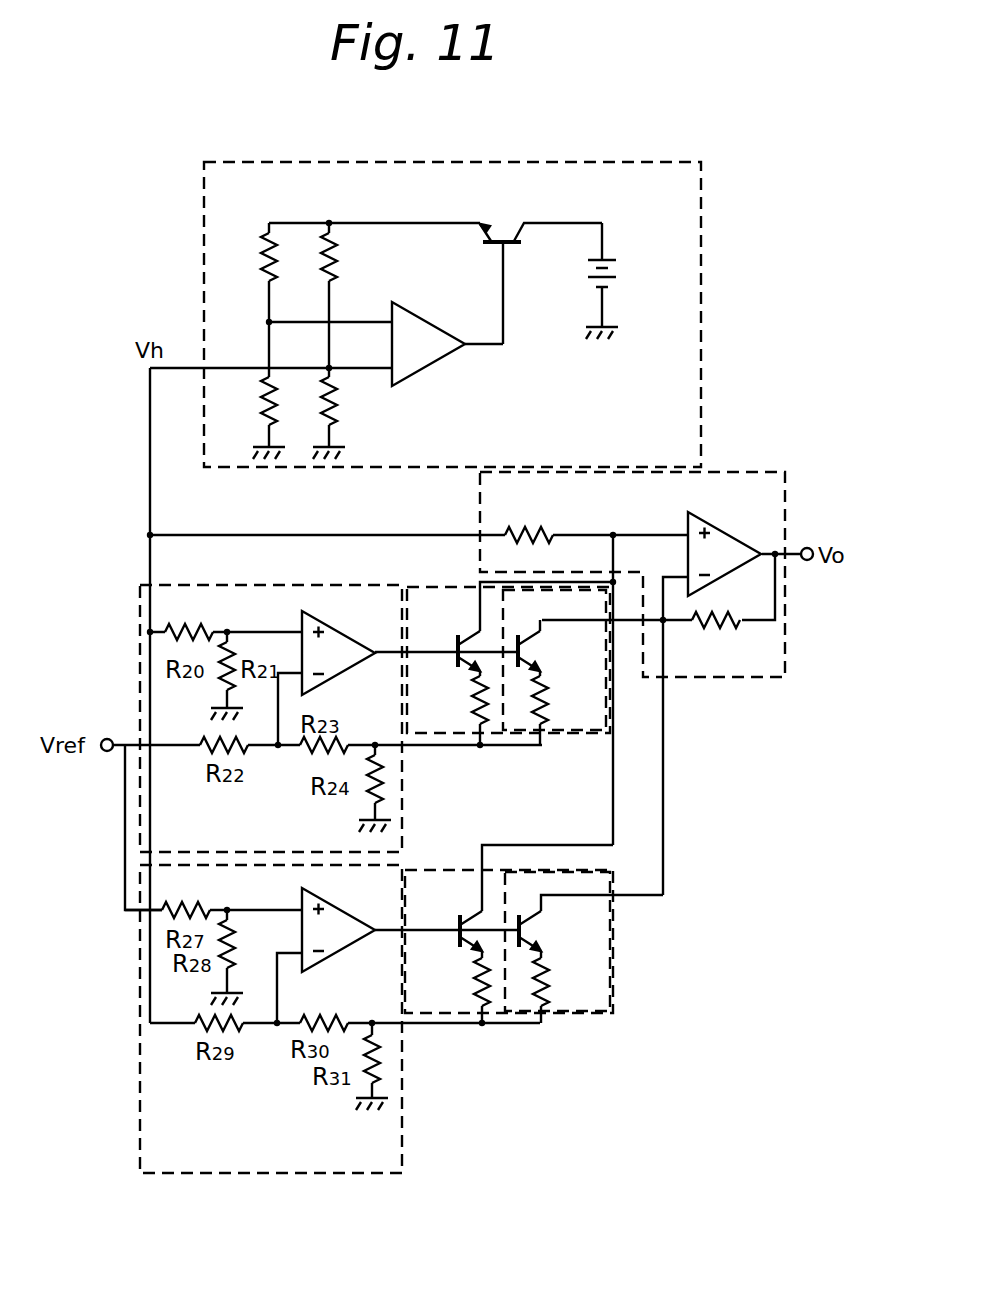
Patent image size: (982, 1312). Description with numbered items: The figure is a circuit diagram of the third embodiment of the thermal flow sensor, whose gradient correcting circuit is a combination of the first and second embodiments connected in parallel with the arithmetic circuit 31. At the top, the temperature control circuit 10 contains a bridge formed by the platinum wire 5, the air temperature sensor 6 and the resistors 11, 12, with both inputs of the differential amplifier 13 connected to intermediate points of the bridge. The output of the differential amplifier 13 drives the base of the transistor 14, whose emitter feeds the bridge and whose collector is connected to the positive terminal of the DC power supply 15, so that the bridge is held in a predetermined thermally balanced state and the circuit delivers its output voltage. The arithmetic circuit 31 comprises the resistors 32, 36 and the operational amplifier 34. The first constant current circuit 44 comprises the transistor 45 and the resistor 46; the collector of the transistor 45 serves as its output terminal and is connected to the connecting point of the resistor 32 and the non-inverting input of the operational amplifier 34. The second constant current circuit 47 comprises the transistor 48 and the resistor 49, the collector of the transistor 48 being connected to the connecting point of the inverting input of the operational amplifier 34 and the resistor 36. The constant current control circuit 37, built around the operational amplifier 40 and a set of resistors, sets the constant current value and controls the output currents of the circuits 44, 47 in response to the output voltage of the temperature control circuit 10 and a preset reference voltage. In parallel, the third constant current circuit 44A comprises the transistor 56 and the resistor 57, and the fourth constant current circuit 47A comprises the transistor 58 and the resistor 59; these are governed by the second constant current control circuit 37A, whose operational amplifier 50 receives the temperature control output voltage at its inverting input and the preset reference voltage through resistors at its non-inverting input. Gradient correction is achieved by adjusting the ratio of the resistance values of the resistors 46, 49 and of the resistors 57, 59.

The temperature control circuit 10 is at (326, 162).
The air temperature sensor 6 is at (276, 264).
The platinum wire 5 is at (336, 264).
The transistor 14 is at (484, 240).
The DC power supply 15 is at (618, 268).
The resistor 11 is at (277, 405).
The resistor 12 is at (337, 392).
The differential amplifier 13 is at (431, 352).
The arithmetic circuit 31 is at (732, 472).
The operational amplifier 34 is at (722, 525).
The resistor 32 is at (535, 544).
The resistor 36 is at (728, 612).
The constant current control circuit 37 is at (402, 786).
The first constant current circuit 44 is at (428, 587).
The second constant current circuit 47 is at (572, 733).
The operational amplifier 40 is at (336, 630).
The transistor 45 is at (470, 637).
The resistor 46 is at (472, 691).
The transistor 48 is at (535, 636).
The resistor 49 is at (547, 690).
The constant current control circuit 37A is at (203, 1176).
The first constant current circuit 44A is at (437, 870).
The second constant current circuit 47A is at (580, 1013).
The operational amplifier 50 is at (333, 906).
The transistor 56 is at (470, 948).
The resistor 57 is at (495, 1008).
The transistor 58 is at (533, 922).
The resistor 59 is at (540, 1005).